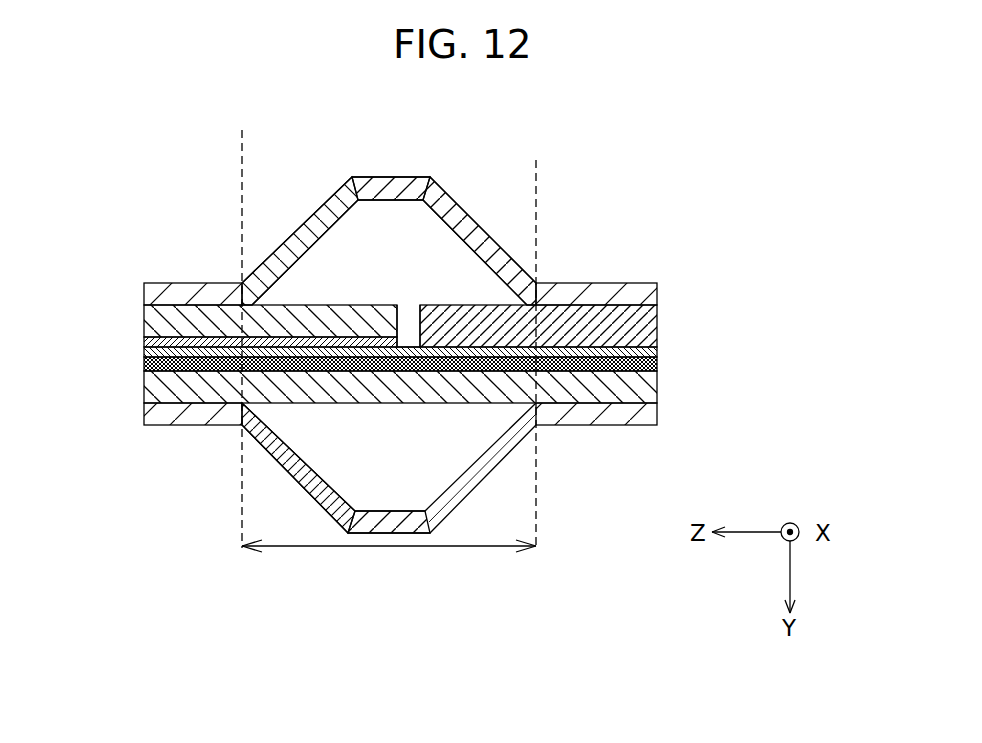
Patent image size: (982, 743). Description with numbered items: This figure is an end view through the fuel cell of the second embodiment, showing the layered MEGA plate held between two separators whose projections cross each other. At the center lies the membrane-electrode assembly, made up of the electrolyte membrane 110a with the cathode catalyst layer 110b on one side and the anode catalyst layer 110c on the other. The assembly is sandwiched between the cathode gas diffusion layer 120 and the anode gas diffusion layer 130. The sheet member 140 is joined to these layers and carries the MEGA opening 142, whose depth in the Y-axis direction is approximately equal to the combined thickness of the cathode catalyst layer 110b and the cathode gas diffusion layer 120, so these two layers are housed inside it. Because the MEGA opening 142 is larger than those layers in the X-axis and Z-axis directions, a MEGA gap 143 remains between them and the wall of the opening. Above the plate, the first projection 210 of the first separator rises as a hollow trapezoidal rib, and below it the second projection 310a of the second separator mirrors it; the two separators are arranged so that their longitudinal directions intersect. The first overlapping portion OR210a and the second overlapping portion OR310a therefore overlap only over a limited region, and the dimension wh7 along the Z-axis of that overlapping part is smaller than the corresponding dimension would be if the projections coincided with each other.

The cathode gas diffusion layer 120 is at (192, 303).
The anode gas diffusion layer 130 is at (143, 397).
The sheet member 140 is at (657, 324).
The MEGA opening 142 is at (421, 307).
The MEGA gap 143 is at (408, 330).
The electrolyte membrane 110a is at (657, 352).
The cathode catalyst layer 110b is at (212, 352).
The anode catalyst layer 110c is at (657, 373).
The first projection 210 is at (432, 207).
The first overlapping portion OR210a is at (360, 268).
The second projection 310a is at (483, 467).
The second overlapping portion OR310a is at (355, 457).
The dimension along the Z-axis of the overlapping part wh7 is at (382, 548).